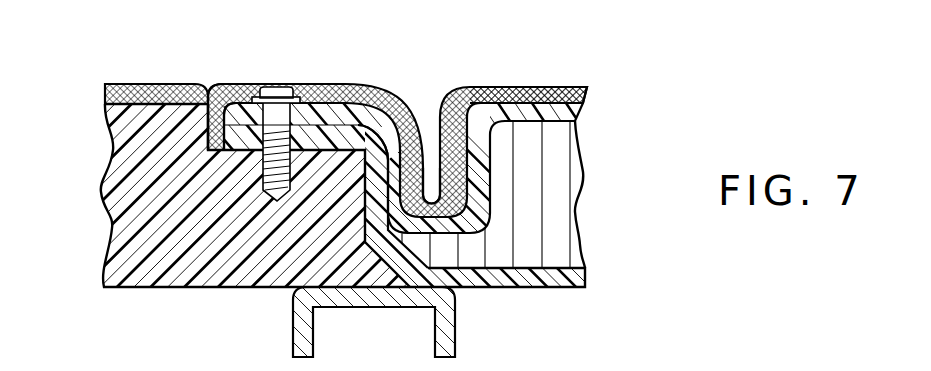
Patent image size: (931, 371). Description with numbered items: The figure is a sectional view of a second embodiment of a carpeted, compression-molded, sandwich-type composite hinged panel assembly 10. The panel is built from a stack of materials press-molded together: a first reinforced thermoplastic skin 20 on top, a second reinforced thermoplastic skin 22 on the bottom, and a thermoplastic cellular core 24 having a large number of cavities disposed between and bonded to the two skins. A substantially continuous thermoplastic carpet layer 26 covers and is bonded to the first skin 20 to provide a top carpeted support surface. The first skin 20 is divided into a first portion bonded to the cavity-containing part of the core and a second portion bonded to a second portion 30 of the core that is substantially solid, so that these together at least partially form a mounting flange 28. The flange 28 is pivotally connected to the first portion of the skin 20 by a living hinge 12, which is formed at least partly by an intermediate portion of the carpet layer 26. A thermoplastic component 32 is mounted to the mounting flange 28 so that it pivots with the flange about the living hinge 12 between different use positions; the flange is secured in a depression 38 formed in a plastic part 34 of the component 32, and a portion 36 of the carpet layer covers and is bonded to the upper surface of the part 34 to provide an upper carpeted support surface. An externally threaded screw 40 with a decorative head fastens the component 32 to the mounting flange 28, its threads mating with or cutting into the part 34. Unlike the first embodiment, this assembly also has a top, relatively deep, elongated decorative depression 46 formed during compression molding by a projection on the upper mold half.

The panel assembly 10 is at (533, 52).
The living hinge 12 is at (356, 149).
The first reinforced thermoplastic skin 20 is at (583, 116).
The second reinforced thermoplastic skin 22 is at (588, 278).
The thermoplastic cellular core 24 is at (580, 192).
The carpet layer 26 is at (590, 97).
The mounting flange 28 is at (323, 83).
The second portion of the core 30 is at (385, 93).
The thermoplastic component 32 is at (105, 104).
The plastic part 34 is at (455, 320).
The portion of the carpet layer 36 is at (158, 85).
The depression 38 is at (212, 150).
The screw 40 is at (282, 84).
The decorative depression 46 is at (437, 145).